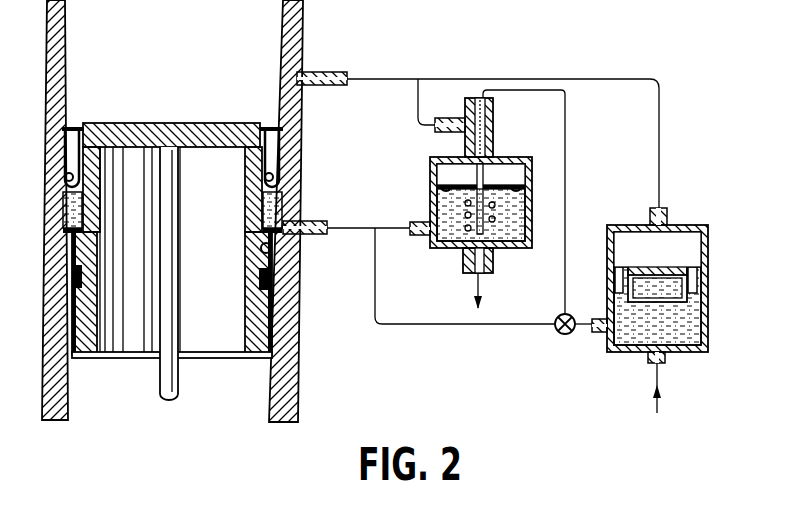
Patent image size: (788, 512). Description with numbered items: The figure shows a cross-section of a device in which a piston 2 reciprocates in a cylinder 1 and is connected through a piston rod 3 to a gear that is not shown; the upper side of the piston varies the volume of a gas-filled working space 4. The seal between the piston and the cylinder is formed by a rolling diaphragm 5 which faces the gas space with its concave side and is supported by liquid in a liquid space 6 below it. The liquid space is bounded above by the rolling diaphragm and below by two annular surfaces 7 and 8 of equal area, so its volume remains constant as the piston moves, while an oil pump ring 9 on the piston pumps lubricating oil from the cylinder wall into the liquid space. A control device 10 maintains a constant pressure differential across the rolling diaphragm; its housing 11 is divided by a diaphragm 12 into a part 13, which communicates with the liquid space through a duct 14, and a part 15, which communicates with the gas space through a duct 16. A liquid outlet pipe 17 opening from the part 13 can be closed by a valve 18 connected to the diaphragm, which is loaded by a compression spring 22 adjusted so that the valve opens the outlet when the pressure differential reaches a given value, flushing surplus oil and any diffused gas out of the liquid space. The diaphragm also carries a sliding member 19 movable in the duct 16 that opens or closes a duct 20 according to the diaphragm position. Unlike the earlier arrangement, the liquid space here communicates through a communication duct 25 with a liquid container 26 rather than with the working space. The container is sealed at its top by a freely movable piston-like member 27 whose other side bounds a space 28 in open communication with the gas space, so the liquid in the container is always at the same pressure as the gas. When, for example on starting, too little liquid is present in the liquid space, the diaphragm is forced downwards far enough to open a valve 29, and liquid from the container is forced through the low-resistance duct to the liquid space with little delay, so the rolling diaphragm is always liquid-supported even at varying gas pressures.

The cylinder 1 is at (56, 54).
The piston 2 is at (85, 318).
The piston rod 3 is at (180, 374).
The working space 4 is at (181, 71).
The rolling diaphragm 5 is at (66, 172).
The liquid space 6 is at (62, 218).
The annular surface 7 is at (67, 236).
The annular surface 8 is at (272, 255).
The oil pump ring 9 is at (275, 282).
The control device 10 is at (535, 186).
The housing 11 is at (510, 236).
The diaphragm 12 is at (497, 186).
The part 13 is at (441, 251).
The duct 14 is at (345, 226).
The part 15 is at (500, 168).
The duct 16 is at (470, 80).
The liquid outlet pipe 17 is at (484, 288).
The valve 18 is at (513, 254).
The sliding member 19 is at (483, 111).
The duct 20 is at (418, 118).
The compression spring 22 is at (500, 217).
The communication duct 25 is at (521, 326).
The liquid container 26 is at (684, 334).
The piston-like member 27 is at (675, 264).
The space 28 is at (678, 243).
The valve 29 is at (565, 336).